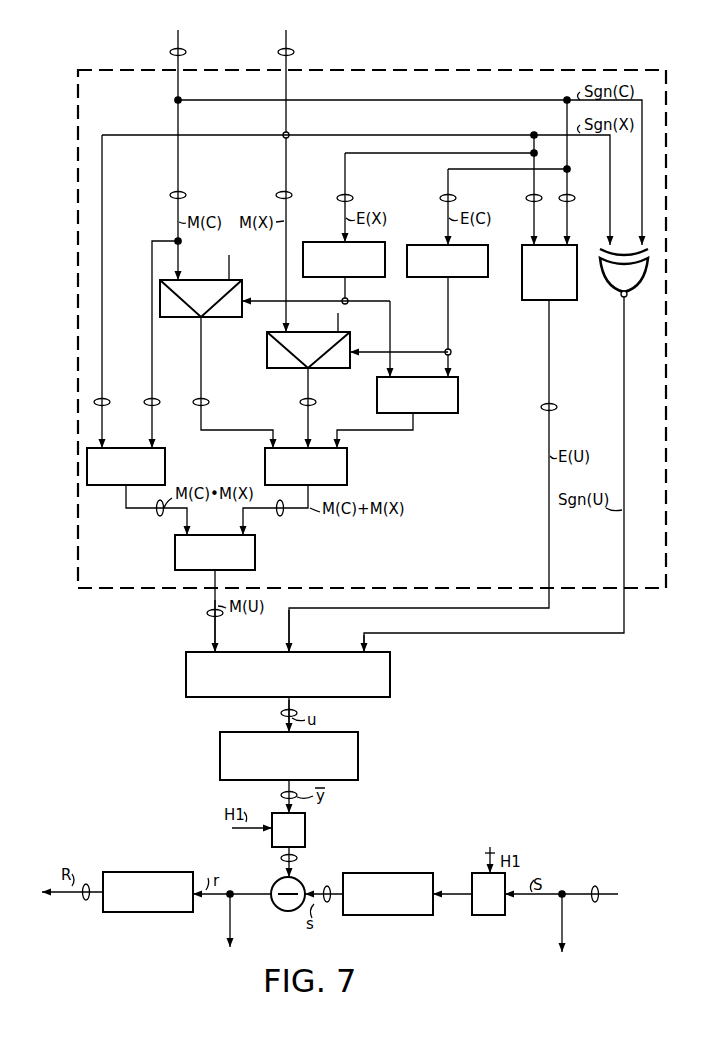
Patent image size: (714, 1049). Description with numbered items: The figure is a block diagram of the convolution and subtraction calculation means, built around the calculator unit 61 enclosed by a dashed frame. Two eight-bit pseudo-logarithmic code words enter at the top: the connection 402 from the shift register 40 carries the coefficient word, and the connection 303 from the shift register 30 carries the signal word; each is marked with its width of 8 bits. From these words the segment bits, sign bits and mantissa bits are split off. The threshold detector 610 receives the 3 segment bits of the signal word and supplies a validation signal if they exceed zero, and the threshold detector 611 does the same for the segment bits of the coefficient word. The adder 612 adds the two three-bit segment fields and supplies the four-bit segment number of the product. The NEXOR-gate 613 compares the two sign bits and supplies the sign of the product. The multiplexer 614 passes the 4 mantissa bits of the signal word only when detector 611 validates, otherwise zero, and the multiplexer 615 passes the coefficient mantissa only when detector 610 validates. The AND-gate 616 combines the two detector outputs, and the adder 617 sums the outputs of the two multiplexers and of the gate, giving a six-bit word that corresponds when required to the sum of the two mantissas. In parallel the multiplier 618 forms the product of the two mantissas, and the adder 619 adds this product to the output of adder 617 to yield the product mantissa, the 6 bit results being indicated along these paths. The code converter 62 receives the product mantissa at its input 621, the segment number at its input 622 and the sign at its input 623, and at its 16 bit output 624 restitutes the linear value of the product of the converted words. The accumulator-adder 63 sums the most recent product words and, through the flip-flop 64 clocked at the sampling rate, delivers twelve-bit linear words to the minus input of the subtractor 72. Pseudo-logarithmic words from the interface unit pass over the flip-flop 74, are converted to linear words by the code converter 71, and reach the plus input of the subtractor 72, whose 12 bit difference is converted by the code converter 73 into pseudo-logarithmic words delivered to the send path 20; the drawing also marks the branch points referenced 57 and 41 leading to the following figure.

The calculator unit 61 is at (122, 592).
The shift register 40 is at (181, 143).
The shift register 30 is at (287, 169).
The connection 402 is at (170, 53).
The connection 303 is at (294, 53).
The 8-bit bus width 8 is at (186, 52).
The 4-bit bus width 4 is at (170, 196).
The 3-bit bus width 3 is at (340, 200).
The 6-bit bus width 6 is at (158, 516).
The 12-bit bus width 12 is at (281, 796).
The 16-bit bus width 16 is at (281, 713).
The threshold detector 610 is at (320, 279).
The threshold detector 611 is at (434, 279).
The adder 612 is at (578, 292).
The NEXOR-gate 613 is at (633, 292).
The multiplexer 614 is at (290, 372).
The multiplexer 615 is at (218, 320).
The AND-gate 616 is at (460, 409).
The adder 617 is at (348, 475).
The multiplier 618 is at (166, 475).
The adder 619 is at (255, 548).
The input 621 is at (208, 644).
The input 622 is at (284, 644).
The input 623 is at (360, 644).
The code converter 62 is at (392, 683).
The output 624 is at (297, 712).
The accumulator-adder 63 is at (358, 760).
The flip-flop 64 is at (305, 832).
The subtractor 72 is at (278, 910).
The linear-to-pseudo-logarithmic code converter 73 is at (154, 870).
The pseudo-logarithmic-to-linear code converter 71 is at (406, 872).
The flip-flop 74 is at (496, 918).
The send path 20 is at (55, 896).
The output to FIG. 8 57 is at (225, 936).
The input from FIG. 8 41 is at (564, 938).